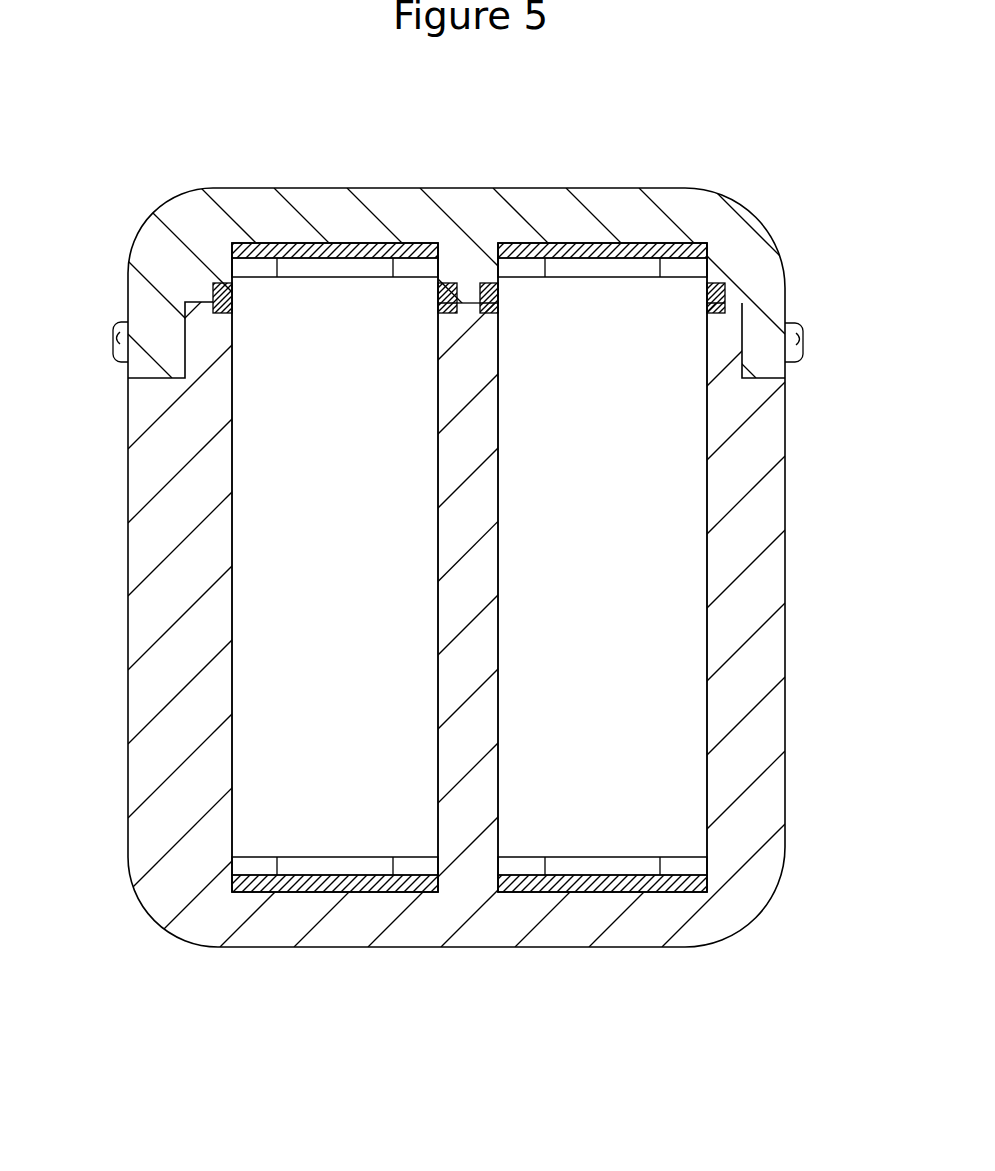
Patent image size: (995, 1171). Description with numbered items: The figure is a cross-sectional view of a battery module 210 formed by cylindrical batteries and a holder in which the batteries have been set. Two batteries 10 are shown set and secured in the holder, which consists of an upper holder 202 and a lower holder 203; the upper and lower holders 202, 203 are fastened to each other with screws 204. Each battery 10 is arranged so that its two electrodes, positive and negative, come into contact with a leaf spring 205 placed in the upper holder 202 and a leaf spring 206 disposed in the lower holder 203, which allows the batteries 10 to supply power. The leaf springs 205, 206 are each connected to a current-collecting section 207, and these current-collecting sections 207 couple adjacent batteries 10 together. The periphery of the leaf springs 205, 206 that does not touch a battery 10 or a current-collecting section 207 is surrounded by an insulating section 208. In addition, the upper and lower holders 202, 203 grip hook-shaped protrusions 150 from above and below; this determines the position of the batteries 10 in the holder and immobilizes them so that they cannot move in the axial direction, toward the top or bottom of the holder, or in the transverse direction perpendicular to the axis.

The battery module 210 is at (388, 91).
The battery 10 is at (318, 650).
The hook-shaped protrusion 150 is at (722, 283).
The upper holder 202 is at (768, 297).
The lower holder 203 is at (760, 452).
The screw 204 is at (116, 338).
The leaf spring 205 is at (354, 265).
The leaf spring 206 is at (350, 870).
The current-collecting section 207 is at (282, 258).
The insulating section 208 is at (247, 267).